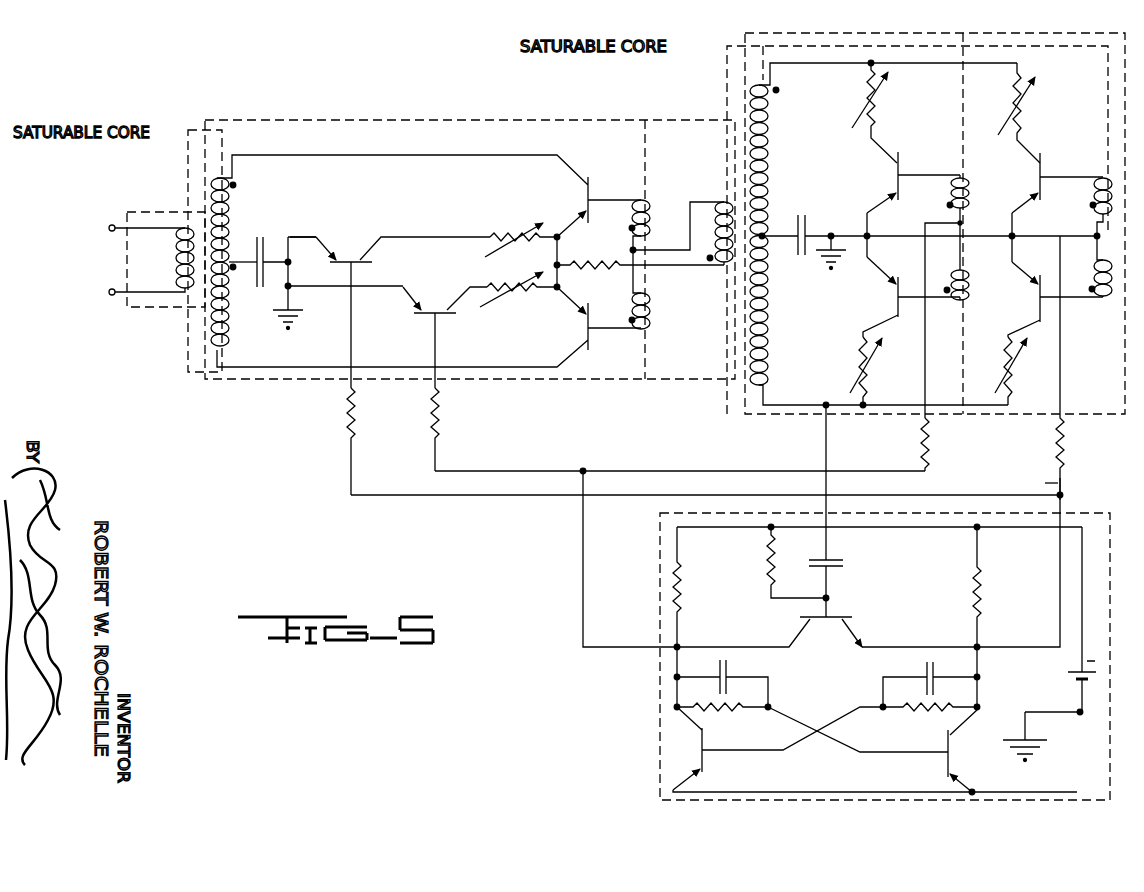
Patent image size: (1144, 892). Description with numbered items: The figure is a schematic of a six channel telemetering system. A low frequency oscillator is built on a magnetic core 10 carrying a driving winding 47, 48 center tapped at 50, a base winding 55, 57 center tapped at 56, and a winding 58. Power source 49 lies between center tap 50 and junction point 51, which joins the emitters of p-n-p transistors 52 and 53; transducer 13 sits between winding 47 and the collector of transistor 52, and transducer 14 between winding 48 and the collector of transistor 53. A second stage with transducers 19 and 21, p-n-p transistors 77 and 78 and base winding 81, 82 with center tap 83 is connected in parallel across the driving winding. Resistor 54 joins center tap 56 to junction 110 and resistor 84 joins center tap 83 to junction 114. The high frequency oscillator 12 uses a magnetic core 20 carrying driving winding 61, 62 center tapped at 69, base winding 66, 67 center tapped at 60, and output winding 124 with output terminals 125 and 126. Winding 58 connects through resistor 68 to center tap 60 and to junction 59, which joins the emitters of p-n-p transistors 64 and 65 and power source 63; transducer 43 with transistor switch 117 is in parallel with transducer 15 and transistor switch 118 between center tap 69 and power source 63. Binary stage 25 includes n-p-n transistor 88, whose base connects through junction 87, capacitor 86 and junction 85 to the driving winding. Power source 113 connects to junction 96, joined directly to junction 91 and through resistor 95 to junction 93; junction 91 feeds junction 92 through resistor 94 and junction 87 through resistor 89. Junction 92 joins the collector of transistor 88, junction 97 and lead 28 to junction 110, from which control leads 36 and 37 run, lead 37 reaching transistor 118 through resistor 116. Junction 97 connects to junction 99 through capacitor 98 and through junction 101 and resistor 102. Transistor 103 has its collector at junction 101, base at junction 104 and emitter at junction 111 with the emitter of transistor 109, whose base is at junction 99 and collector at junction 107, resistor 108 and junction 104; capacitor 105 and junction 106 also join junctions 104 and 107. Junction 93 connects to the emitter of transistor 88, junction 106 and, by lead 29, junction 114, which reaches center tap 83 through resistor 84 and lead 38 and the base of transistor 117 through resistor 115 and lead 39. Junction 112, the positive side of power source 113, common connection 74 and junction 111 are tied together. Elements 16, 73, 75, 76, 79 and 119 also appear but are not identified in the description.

The magnetic core 10 is at (728, 60).
The high frequency oscillator 12 is at (230, 118).
The transducer 13 is at (860, 99).
The transducer 14 is at (857, 364).
The transducer 15 is at (516, 278).
The input transformer 16 is at (151, 210).
The transducer 19 is at (1010, 98).
The magnetic core 20 is at (188, 150).
The transducer 21 is at (1000, 369).
The binary stage 25 is at (1110, 540).
The lead 28 is at (581, 573).
The lead 29 is at (1063, 497).
The control lead 36 is at (885, 471).
The control lead 37 is at (433, 467).
The lead 38 is at (1040, 484).
The lead 39 is at (496, 495).
The transducer 43 is at (517, 228).
The driving winding 47 is at (775, 147).
The driving winding 48 is at (766, 332).
The power source 49 is at (799, 215).
The center tap 50 is at (764, 235).
The junction point 51 is at (870, 235).
The p-n-p transistor 52 is at (900, 155).
The p-n-p transistor 53 is at (895, 279).
The resistor 54 is at (927, 446).
The base winding 55 is at (969, 184).
The center tap 56 is at (967, 224).
The base winding 57 is at (967, 292).
The winding 58 is at (725, 200).
The junction 59 is at (555, 264).
The center tap 60 is at (628, 251).
The driving winding 61 is at (230, 205).
The driving winding 62 is at (222, 322).
The power source 63 is at (259, 241).
The p-n-p transistor 64 is at (588, 182).
The p-n-p transistor 65 is at (588, 350).
The base winding 66 is at (650, 223).
The base winding 67 is at (650, 318).
The resistor 68 is at (591, 258).
The center tap 69 is at (229, 262).
The junction 73 is at (833, 235).
The common connection 74 is at (301, 312).
The junction 75 is at (872, 63).
The junction 76 is at (867, 404).
The p-n-p transistor 77 is at (1041, 156).
The p-n-p transistor 78 is at (1041, 278).
The junction 79 is at (1013, 236).
The base winding 81 is at (1116, 182).
The base winding 82 is at (1114, 287).
The center tap 83 is at (1106, 236).
The resistor 84 is at (1062, 449).
The junction 85 is at (826, 402).
The capacitor 86 is at (842, 562).
The junction 87 is at (827, 599).
The n-p-n transistor 88 is at (852, 616).
The resistor 89 is at (768, 562).
The junction 91 is at (773, 530).
The junction 92 is at (679, 647).
The junction 93 is at (978, 647).
The resistor 94 is at (680, 584).
The resistor 95 is at (972, 590).
The junction 96 is at (980, 529).
The junction 97 is at (679, 675).
The capacitor 98 is at (724, 662).
The junction 99 is at (769, 708).
The junction 101 is at (678, 707).
The resistor 102 is at (731, 708).
The p-n-p transistor 103 is at (704, 739).
The junction 104 is at (881, 709).
The capacitor 105 is at (935, 664).
The junction 106 is at (978, 678).
The junction 107 is at (978, 710).
The resistor 108 is at (935, 706).
The p-n-p transistor 109 is at (947, 740).
The junction 110 is at (584, 470).
The junction 111 is at (974, 789).
The junction 112 is at (1080, 716).
The power source 113 is at (1061, 683).
The junction 114 is at (1062, 497).
The resistor 115 is at (354, 408).
The resistor 116 is at (438, 408).
The p-n-p transistor switch 117 is at (372, 265).
The p-n-p transistor switch 118 is at (456, 315).
The junction 119 is at (289, 284).
The output winding 124 is at (174, 262).
The output terminal 125 is at (109, 225).
The output terminal 126 is at (109, 295).